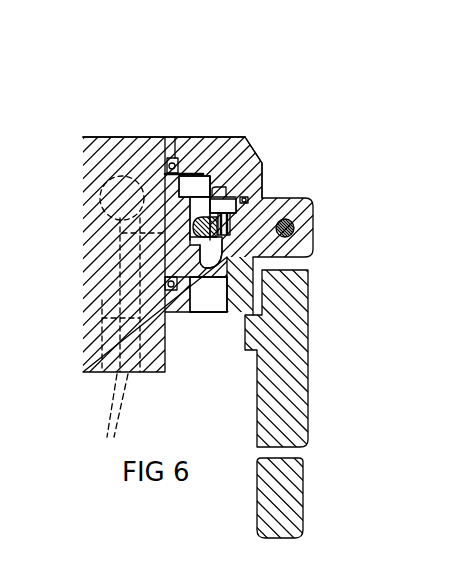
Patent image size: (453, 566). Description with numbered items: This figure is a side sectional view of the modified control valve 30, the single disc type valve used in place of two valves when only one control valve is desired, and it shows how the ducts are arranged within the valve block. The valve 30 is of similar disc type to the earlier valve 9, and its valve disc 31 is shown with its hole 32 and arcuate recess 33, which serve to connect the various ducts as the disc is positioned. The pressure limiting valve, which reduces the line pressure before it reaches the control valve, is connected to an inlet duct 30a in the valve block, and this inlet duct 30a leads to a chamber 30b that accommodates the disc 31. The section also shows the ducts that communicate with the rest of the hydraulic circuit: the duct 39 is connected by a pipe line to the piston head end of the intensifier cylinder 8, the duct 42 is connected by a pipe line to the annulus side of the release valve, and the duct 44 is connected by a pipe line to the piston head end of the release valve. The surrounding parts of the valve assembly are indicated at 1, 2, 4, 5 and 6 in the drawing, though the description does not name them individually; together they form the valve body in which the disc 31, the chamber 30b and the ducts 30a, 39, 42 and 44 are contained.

The housing 1 is at (100, 165).
The cover body 2 is at (245, 137).
The bore 4 is at (190, 173).
The valve member 5 is at (209, 213).
The seat insert 6 is at (227, 190).
The intensifier cylinder 8 is at (258, 198).
The valve 9 is at (173, 137).
The control valve 30 is at (85, 258).
The inlet duct 30a is at (222, 312).
The chamber 30b is at (215, 268).
The valve disc 31 is at (200, 215).
The hole 32 is at (176, 314).
The arcuate recess 33 is at (203, 173).
The duct 39 is at (105, 186).
The duct 42 is at (122, 233).
The duct 44 is at (107, 437).